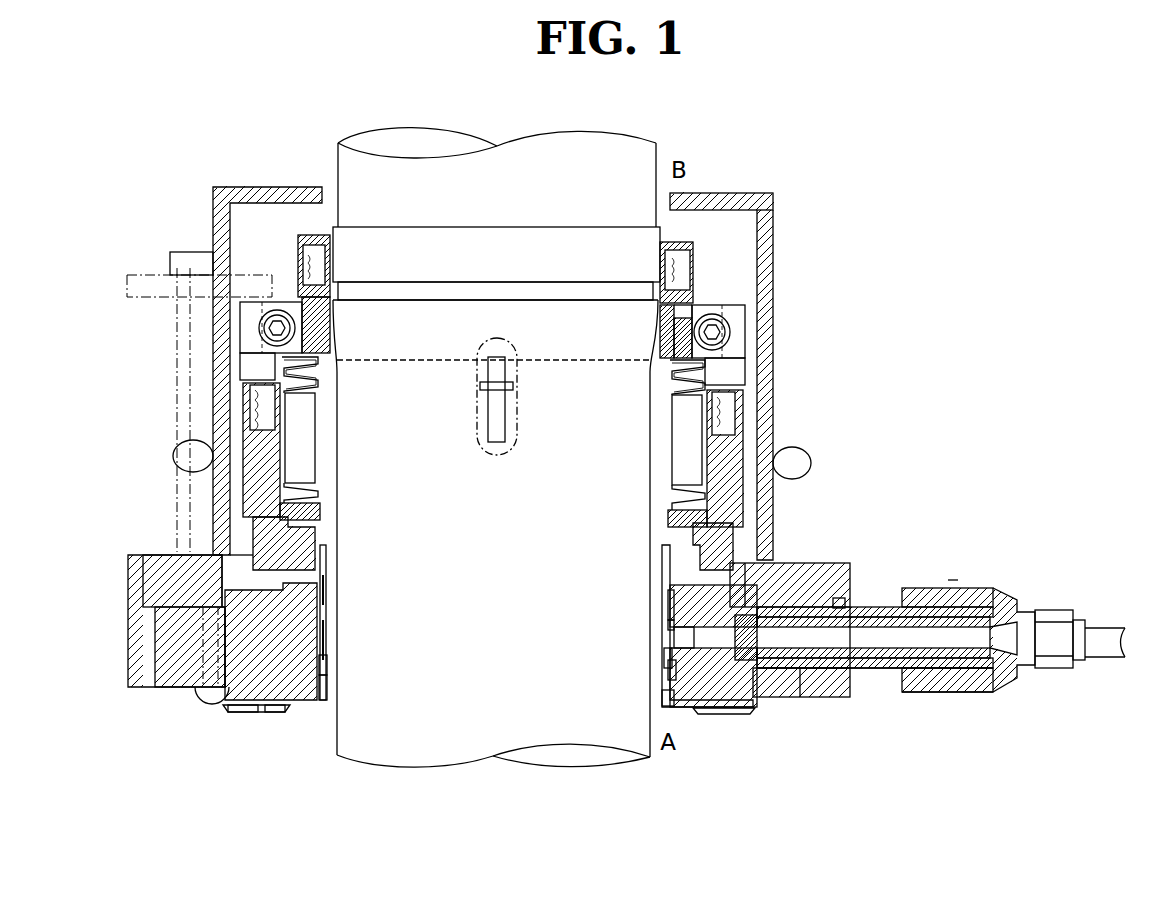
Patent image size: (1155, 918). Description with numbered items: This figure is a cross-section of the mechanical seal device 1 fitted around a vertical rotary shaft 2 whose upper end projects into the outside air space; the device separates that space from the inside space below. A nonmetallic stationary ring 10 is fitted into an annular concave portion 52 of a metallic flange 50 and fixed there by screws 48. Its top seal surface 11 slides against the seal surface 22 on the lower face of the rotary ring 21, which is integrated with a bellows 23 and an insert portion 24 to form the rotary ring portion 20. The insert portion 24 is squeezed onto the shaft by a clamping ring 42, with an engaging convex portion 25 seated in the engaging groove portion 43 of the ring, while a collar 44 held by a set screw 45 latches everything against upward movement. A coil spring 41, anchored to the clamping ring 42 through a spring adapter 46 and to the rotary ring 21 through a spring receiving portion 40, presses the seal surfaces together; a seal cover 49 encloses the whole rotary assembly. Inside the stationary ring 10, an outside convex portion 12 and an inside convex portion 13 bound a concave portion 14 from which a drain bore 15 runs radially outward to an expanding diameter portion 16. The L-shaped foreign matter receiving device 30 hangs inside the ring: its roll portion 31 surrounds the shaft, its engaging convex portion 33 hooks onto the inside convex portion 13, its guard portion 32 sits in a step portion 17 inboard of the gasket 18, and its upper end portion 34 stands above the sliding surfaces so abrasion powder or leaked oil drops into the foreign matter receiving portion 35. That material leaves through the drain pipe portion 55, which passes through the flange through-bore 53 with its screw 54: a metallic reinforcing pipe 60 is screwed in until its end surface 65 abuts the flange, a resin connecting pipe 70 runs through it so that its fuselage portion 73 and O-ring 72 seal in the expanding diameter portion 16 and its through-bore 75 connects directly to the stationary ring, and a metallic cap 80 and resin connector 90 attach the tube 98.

The mechanical seal device 1 is at (897, 376).
The rotary shaft 2 is at (624, 167).
The stationary ring 10 is at (668, 700).
The seal surface 11 is at (700, 556).
The outside convex portion 12 is at (672, 625).
The inside convex portion 13 is at (312, 690).
The concave portion 14 is at (683, 662).
The drain bore 15 is at (680, 640).
The expanding diameter portion 16 is at (722, 714).
The step portion 17 is at (272, 714).
The gasket 18 is at (238, 714).
The rotary ring portion 20 is at (664, 462).
The rotary ring 21 is at (668, 516).
The seal surface 22 is at (672, 600).
The bellows 23 is at (789, 445).
The insert portion 24 is at (767, 318).
The engaging convex portion 25 is at (693, 303).
The foreign matter receiving device 30 is at (325, 678).
The roll portion 31 is at (327, 592).
The guard portion 32 is at (292, 708).
The engaging convex portion 33 is at (327, 664).
The upper end portion 34 is at (327, 562).
The foreign matter receiving portion 35 is at (325, 642).
The spring receiving portion 40 is at (795, 450).
The coil spring 41 is at (745, 398).
The clamping ring 42 is at (730, 322).
The engaging groove portion 43 is at (660, 338).
The collar 44 is at (697, 290).
The set screw 45 is at (700, 250).
The spring adapter 46 is at (740, 372).
The screw 48 is at (202, 698).
The seal cover 49 is at (712, 193).
The flange 50 is at (772, 564).
The annular concave portion 52 is at (790, 590).
The through-bore 53 is at (780, 698).
The screw 54 is at (830, 698).
The drain pipe portion 55 is at (955, 572).
The metallic reinforcing pipe 60 is at (862, 608).
The end surface 65 is at (838, 598).
The resin connecting pipe 70 is at (882, 618).
The O-ring 72 is at (746, 660).
The fuselage portion 73 is at (870, 668).
The through-bore 75 is at (930, 692).
The metallic cap 80 is at (968, 632).
The resin connector 90 is at (1058, 612).
The tube 98 is at (1098, 630).